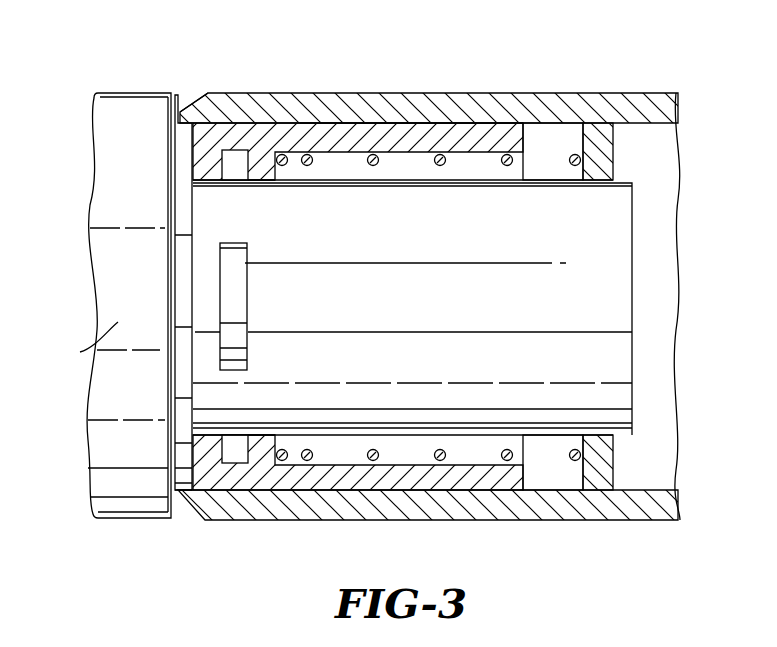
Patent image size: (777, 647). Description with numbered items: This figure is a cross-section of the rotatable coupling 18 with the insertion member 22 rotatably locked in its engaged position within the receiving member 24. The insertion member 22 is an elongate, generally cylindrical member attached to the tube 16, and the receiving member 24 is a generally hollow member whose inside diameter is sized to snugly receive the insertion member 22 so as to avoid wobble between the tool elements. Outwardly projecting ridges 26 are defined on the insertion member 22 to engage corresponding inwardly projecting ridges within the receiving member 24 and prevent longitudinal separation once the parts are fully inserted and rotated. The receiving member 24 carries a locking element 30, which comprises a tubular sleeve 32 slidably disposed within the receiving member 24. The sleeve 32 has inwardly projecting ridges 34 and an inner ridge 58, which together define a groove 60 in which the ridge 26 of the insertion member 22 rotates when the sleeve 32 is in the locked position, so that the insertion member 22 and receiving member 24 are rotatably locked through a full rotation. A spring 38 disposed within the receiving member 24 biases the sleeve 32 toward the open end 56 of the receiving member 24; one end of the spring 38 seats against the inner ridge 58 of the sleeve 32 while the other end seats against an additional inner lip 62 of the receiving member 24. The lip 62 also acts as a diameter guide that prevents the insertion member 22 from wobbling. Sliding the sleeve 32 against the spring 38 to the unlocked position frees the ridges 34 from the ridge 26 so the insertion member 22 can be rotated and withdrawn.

The tube 16 is at (100, 332).
The rotatable coupling 18 is at (172, 537).
The insertion member 22 is at (388, 243).
The receiving member 24 is at (480, 110).
The ridges 26 is at (236, 312).
The locking element 30 is at (413, 121).
The sleeve 32 is at (382, 133).
The ridges 34 is at (206, 97).
The spring 38 is at (440, 166).
The open end 56 is at (177, 114).
The inner ridge 58 is at (262, 160).
The groove 60 is at (234, 160).
The lip 62 is at (600, 166).